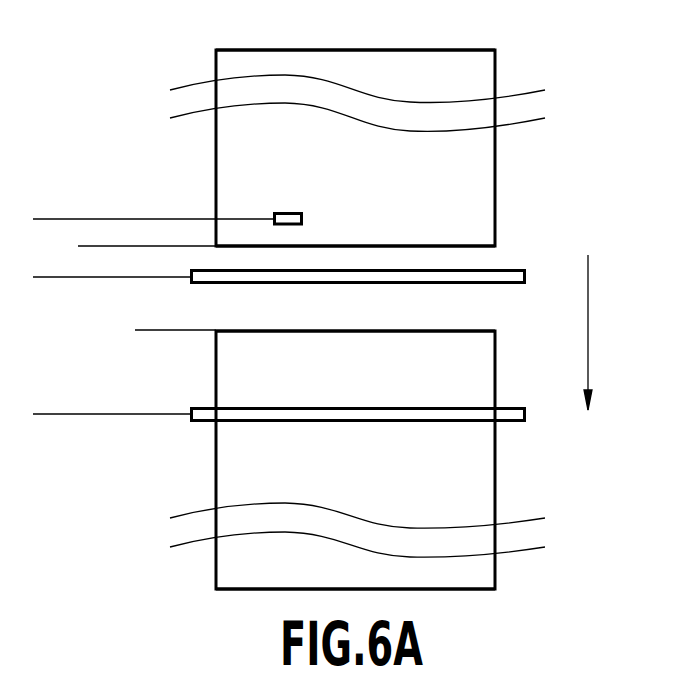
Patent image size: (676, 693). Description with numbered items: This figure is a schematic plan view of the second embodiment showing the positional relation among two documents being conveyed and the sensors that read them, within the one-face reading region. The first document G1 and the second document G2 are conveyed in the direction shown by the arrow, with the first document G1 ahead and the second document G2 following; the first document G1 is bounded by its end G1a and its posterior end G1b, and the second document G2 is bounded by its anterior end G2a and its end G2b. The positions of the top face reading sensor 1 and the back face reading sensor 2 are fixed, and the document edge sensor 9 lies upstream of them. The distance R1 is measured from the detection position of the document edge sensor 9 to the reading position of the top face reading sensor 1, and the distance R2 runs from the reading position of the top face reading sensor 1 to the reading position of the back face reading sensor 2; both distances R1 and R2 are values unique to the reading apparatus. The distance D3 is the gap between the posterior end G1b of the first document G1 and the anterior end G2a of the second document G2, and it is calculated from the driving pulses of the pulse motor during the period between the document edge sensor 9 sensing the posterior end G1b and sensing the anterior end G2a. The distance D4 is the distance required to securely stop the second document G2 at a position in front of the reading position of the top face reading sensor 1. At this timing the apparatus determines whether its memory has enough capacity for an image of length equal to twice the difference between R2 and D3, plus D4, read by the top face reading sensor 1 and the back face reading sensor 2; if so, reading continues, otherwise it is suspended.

The top face reading sensor 1 is at (352, 285).
The back face reading sensor 2 is at (350, 423).
The document edge sensor 9 is at (288, 212).
The first document G1 is at (480, 452).
The first document edge G1a is at (478, 590).
The posterior end of the first document G1b is at (485, 331).
The second document G2 is at (480, 165).
The anterior end of the second document G2a is at (478, 248).
The second document edge G2b is at (485, 50).
The distance R1 is at (61, 277).
The distance R2 is at (61, 414).
The distance D3 is at (160, 330).
The distance D4 is at (117, 310).